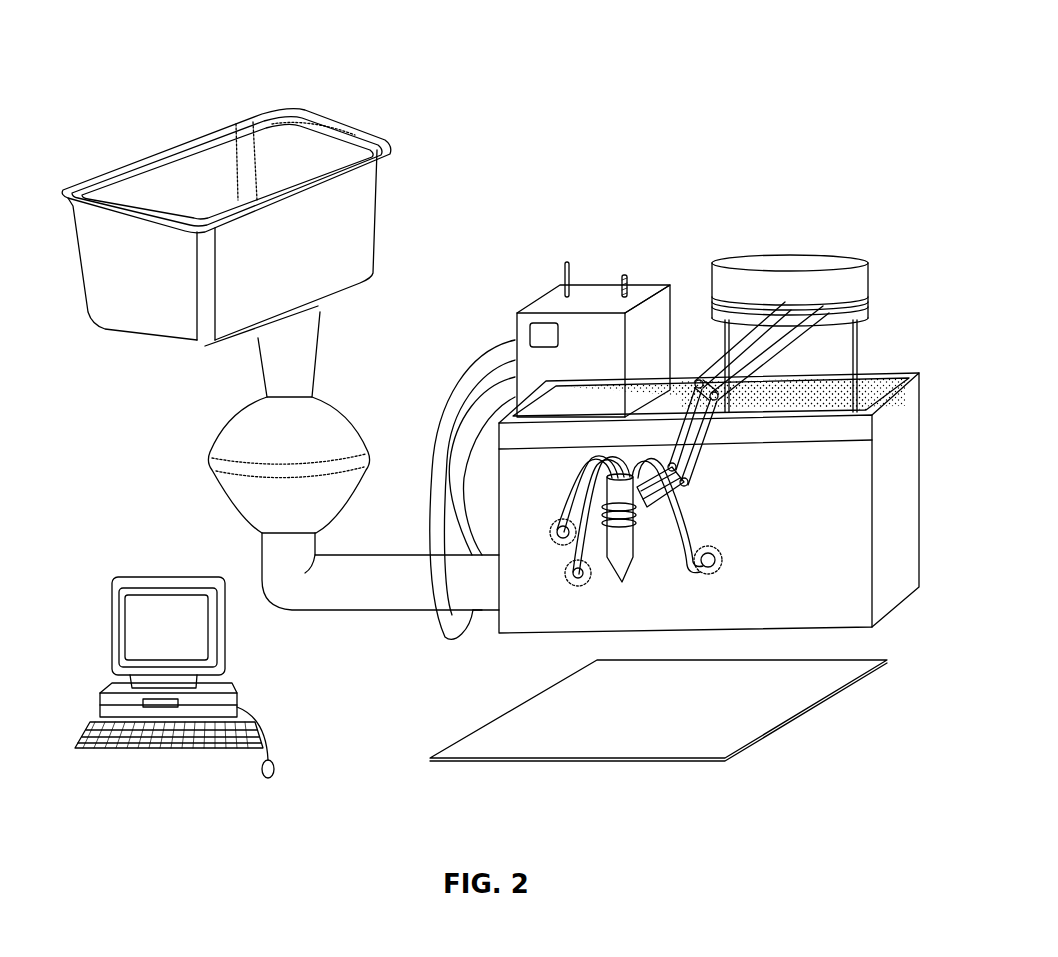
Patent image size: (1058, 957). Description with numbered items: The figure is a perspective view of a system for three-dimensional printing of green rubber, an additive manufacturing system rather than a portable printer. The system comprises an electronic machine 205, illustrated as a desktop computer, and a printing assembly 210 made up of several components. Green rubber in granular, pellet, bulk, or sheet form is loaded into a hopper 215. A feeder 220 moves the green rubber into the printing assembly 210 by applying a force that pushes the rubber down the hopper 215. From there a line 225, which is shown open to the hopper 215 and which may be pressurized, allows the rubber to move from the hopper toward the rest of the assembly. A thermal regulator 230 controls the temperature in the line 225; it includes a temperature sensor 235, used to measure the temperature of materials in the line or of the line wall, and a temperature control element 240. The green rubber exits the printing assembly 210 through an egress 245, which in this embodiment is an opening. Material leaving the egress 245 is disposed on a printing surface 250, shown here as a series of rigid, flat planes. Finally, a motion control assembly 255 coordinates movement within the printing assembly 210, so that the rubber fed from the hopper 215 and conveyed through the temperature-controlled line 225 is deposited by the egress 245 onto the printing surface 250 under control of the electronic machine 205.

The electronic machine 205 is at (108, 627).
The printing assembly 210 is at (146, 52).
The hopper 215 is at (130, 157).
The feeder 220 is at (225, 430).
The line 225 is at (350, 612).
The thermal regulator 230 is at (524, 256).
The temperature sensor 235 is at (628, 275).
The temperature control element 240 is at (568, 262).
The egress 245 is at (610, 572).
The printing surface 250 is at (598, 760).
The motion control assembly 255 is at (832, 253).